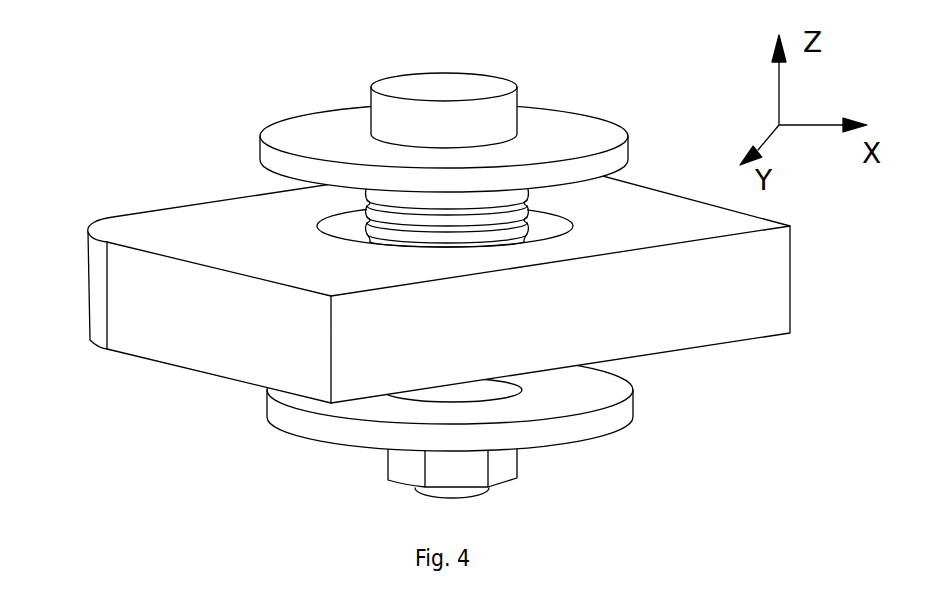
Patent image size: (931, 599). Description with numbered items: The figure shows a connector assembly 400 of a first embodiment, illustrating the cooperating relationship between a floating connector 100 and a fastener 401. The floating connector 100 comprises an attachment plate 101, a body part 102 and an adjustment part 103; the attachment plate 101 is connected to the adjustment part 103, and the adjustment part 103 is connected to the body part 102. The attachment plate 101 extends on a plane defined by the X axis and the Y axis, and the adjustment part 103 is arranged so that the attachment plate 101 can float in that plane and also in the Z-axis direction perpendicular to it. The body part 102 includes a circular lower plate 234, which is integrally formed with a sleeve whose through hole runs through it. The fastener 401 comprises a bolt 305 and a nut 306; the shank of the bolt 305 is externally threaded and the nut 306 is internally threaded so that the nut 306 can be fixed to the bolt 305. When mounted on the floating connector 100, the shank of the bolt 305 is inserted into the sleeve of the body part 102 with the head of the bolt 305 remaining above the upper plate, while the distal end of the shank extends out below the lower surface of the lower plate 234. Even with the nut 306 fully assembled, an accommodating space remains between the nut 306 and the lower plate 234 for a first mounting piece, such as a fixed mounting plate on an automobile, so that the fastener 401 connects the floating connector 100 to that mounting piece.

The connector assembly 400 is at (119, 145).
The floating connector 100 is at (293, 122).
The body part 102 is at (577, 118).
The bolt 305 is at (473, 87).
The adjustment part 103 is at (540, 205).
The attachment plate 101 is at (770, 328).
The lower plate 234 is at (633, 413).
The nut 306 is at (510, 464).
The fastener 401 is at (388, 467).